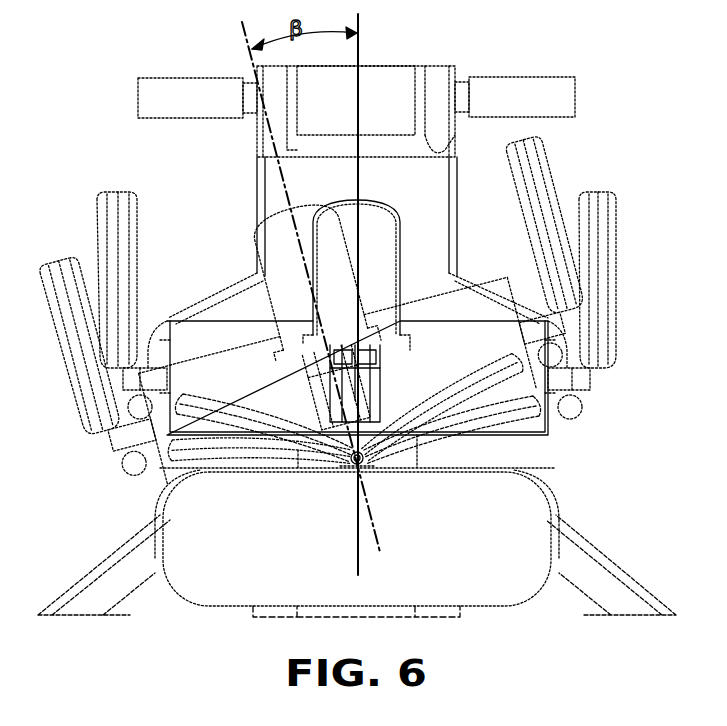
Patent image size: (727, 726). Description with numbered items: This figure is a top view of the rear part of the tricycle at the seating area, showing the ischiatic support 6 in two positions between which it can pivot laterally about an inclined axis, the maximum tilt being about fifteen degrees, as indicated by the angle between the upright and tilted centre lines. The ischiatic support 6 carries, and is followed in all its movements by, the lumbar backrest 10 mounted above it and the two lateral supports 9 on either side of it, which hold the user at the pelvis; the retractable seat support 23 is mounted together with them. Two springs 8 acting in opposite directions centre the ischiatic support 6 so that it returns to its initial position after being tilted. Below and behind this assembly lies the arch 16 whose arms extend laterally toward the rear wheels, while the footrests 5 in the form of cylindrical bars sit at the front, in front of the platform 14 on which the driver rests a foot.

The footrest 5 is at (152, 88).
The ischiatic support 6 is at (188, 343).
The springs 8 is at (364, 458).
The lateral supports 9 is at (105, 233).
The lumbar backrest 10 is at (520, 411).
The platform 14 is at (273, 200).
The arch 16 is at (612, 590).
The retractable seat support 23 is at (385, 250).